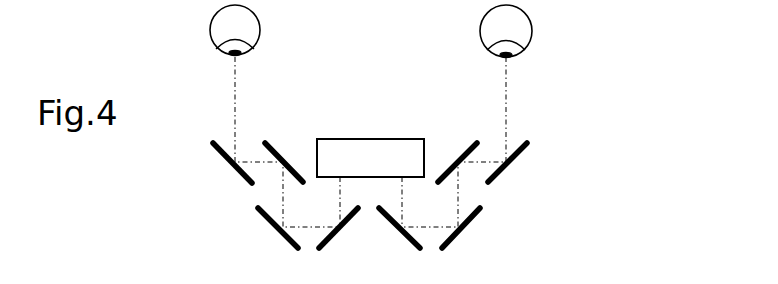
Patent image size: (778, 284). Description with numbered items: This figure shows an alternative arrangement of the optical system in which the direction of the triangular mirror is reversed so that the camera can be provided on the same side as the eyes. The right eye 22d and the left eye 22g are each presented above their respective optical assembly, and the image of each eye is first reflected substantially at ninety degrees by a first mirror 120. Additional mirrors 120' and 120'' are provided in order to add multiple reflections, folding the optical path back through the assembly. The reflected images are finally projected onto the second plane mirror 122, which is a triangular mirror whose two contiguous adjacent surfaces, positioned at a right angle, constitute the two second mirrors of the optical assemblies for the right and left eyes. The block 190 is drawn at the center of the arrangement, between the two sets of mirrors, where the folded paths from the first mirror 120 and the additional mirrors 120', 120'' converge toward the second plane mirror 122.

The right eye 22d is at (213, 13).
The left eye 22g is at (530, 6).
The first mirror 120 is at (359, 180).
The additional mirror 120' is at (376, 135).
The additional mirror 120'' is at (368, 242).
The second plane mirror 122 is at (368, 210).
The display device 190 is at (364, 138).